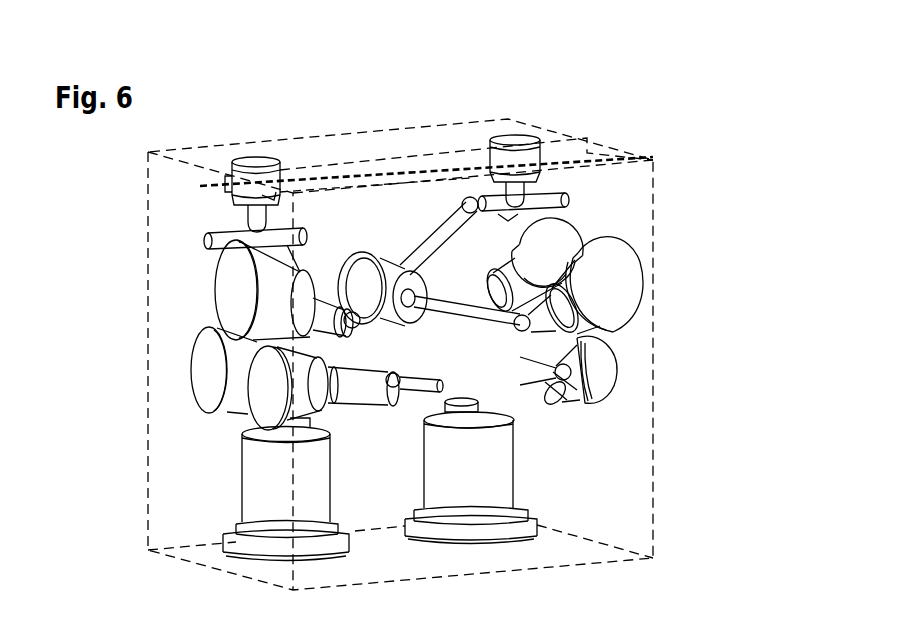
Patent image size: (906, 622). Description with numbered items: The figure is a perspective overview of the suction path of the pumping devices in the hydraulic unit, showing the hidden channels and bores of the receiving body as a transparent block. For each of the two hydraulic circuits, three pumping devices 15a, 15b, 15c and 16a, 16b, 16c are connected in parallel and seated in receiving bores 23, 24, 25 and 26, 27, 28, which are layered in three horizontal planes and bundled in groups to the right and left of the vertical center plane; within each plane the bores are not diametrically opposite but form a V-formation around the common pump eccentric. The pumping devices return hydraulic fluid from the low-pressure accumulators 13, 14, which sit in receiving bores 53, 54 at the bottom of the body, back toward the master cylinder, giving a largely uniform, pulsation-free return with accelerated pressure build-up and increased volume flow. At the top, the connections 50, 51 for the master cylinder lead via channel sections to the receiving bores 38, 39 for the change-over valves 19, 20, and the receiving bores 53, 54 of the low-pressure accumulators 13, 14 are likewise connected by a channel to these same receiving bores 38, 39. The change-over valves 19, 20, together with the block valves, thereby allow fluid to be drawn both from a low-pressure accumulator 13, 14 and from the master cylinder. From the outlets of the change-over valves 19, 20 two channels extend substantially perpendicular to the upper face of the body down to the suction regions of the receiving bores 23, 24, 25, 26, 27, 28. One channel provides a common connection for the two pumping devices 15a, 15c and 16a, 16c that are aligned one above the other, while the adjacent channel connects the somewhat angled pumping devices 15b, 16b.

The low-pressure accumulator 13 is at (233, 488).
The low-pressure accumulator 14 is at (522, 470).
The pumping device 15a is at (190, 377).
The pumping device 15b is at (215, 292).
The pumping device 15c is at (248, 422).
The pumping device 16a is at (582, 250).
The pumping device 16b is at (618, 362).
The pumping device 16c is at (640, 249).
The change-over valve 19 is at (311, 258).
The change-over valve 20 is at (389, 246).
The receiving bore 23 is at (190, 350).
The receiving bore 24 is at (216, 270).
The receiving bore 25 is at (250, 414).
The receiving bore 26 is at (582, 232).
The receiving bore 27 is at (618, 390).
The receiving bore 28 is at (641, 296).
The receiving bore 38 is at (324, 266).
The receiving bore 39 is at (368, 252).
The connection 50 is at (246, 158).
The connection 51 is at (520, 138).
The receiving bore 53 is at (247, 560).
The receiving bore 54 is at (510, 543).